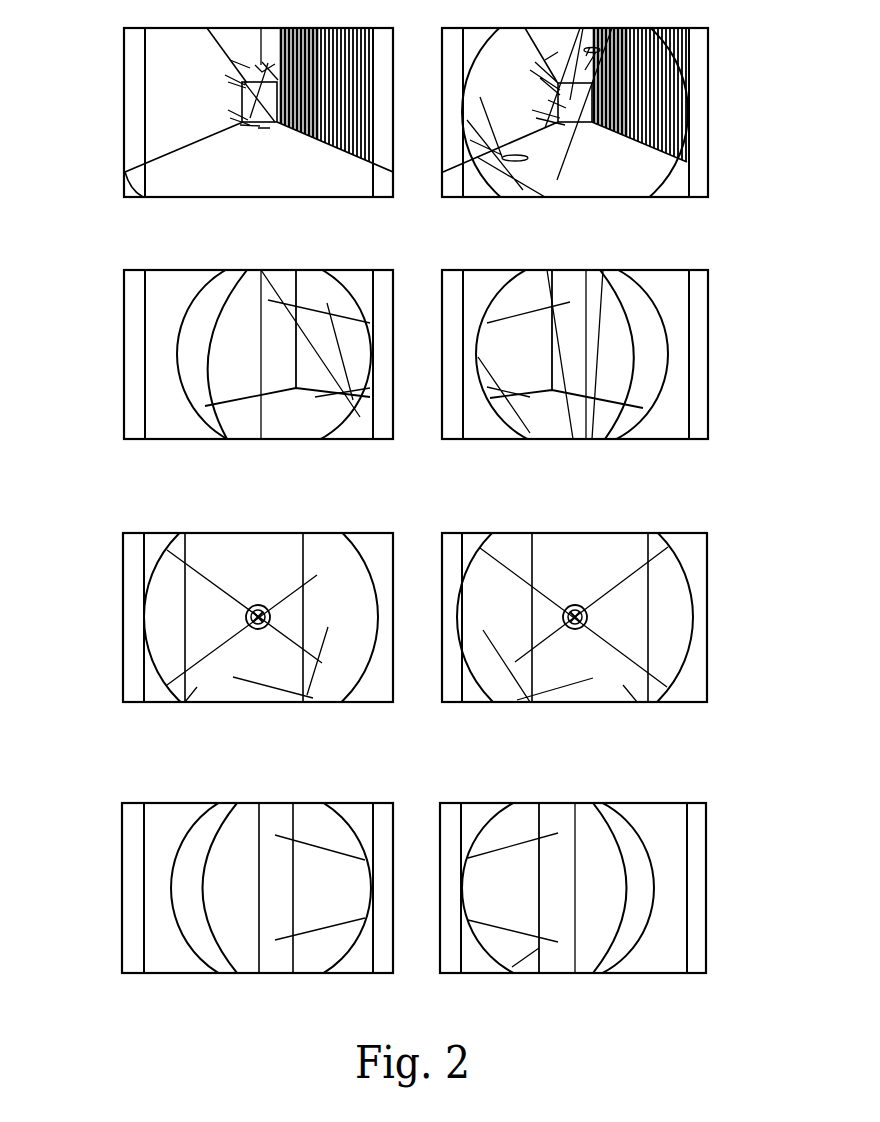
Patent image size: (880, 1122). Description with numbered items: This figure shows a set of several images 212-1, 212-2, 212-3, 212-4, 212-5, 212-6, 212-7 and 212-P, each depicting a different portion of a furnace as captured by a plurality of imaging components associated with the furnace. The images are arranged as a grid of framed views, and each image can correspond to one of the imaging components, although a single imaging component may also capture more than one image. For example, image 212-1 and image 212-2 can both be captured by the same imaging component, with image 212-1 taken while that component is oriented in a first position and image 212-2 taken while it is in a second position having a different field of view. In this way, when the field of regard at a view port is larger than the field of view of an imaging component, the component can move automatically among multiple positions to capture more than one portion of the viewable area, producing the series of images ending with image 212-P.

The image 212-1 is at (124, 89).
The image 212-2 is at (710, 89).
The image 212-3 is at (124, 334).
The image 212-4 is at (710, 329).
The image 212-5 is at (124, 584).
The image 212-6 is at (710, 584).
The image 212-7 is at (124, 865).
The image 212-P is at (710, 869).